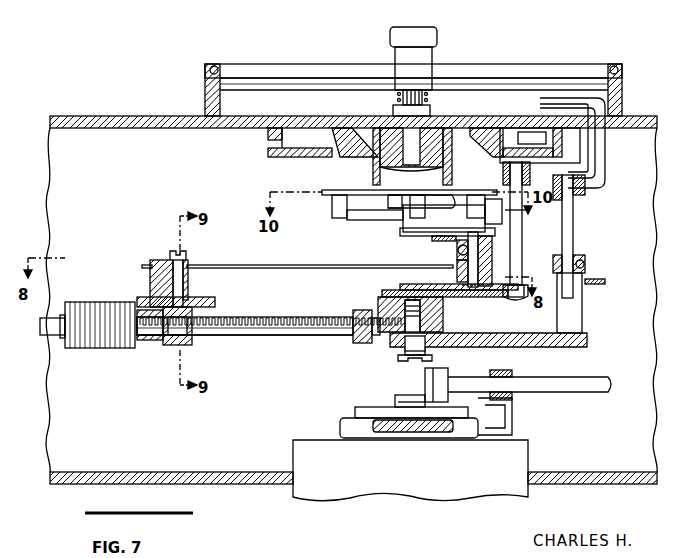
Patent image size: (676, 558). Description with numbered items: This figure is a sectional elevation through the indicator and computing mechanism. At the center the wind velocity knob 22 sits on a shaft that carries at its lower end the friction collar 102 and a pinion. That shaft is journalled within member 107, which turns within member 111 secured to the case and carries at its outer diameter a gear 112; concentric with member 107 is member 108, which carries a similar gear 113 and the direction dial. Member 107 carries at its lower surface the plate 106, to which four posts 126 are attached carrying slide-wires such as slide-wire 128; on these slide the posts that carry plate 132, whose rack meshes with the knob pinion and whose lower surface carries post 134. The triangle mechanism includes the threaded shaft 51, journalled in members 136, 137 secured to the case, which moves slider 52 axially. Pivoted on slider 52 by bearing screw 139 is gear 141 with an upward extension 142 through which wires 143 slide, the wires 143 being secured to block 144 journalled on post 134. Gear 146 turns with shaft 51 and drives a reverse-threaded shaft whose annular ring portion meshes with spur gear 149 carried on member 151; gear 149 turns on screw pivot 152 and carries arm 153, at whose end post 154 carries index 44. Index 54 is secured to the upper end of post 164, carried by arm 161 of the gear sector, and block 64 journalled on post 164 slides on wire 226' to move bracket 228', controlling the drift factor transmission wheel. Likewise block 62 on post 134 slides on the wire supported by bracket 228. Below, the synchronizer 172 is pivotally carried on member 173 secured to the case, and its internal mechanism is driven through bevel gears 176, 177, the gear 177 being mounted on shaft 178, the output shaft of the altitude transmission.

The wind velocity knob 22 is at (437, 37).
The index 44 is at (540, 106).
The index 54 is at (546, 98).
The gear 113 is at (268, 136).
The gear 112 is at (268, 157).
The member 107 is at (380, 150).
The member 111 is at (373, 160).
The member 108 is at (546, 140).
The plate 106 is at (326, 190).
The friction collar 102 is at (452, 200).
The posts 126 is at (332, 205).
The slide-wire 128 is at (370, 220).
The plate 132 is at (410, 232).
The bracket 228 is at (429, 246).
The block 62 is at (457, 251).
The block 144 is at (457, 276).
The post 134 is at (483, 236).
The wires 143 is at (278, 268).
The spur gear 149 is at (445, 295).
The member 151 is at (443, 320).
The member 137 is at (360, 343).
The arm 161 is at (530, 347).
The screw pivot 152 is at (398, 358).
The post 154 is at (522, 212).
The arm 153 is at (510, 300).
The post 164 is at (582, 318).
The block 64 is at (578, 255).
The wire 226' is at (602, 267).
The bracket 228' is at (612, 292).
The bearing screw 139 is at (186, 254).
The upward extension 142 is at (188, 275).
The gear 141 is at (215, 302).
The slider 52 is at (188, 345).
The member 136 is at (148, 340).
The threaded shaft 51 is at (262, 335).
The gear 146 is at (78, 348).
The shaft 178 is at (558, 392).
The bevel gear 177 is at (425, 382).
The bevel gear 176 is at (395, 400).
The member 173 is at (340, 424).
The synchronizer 172 is at (293, 448).